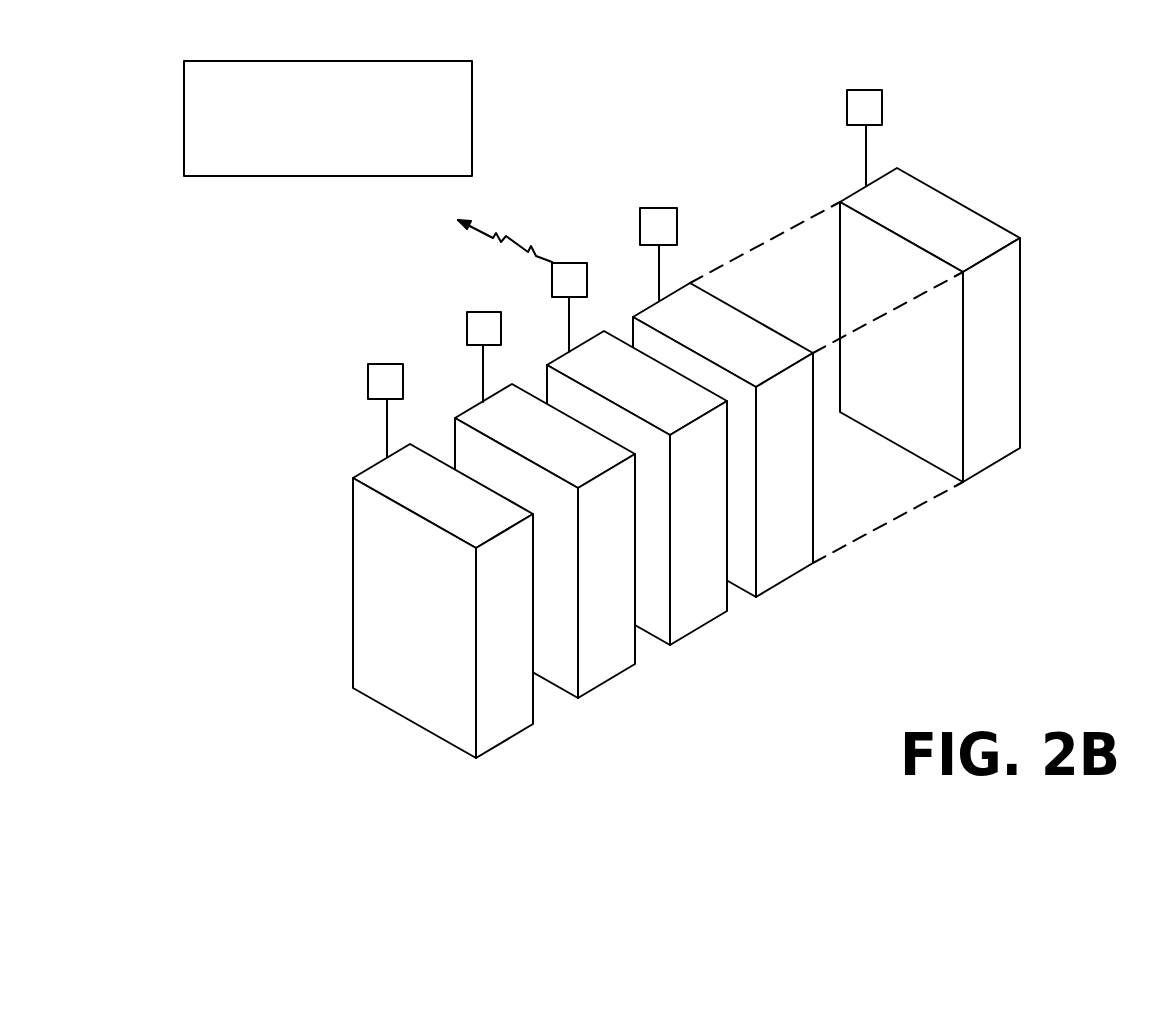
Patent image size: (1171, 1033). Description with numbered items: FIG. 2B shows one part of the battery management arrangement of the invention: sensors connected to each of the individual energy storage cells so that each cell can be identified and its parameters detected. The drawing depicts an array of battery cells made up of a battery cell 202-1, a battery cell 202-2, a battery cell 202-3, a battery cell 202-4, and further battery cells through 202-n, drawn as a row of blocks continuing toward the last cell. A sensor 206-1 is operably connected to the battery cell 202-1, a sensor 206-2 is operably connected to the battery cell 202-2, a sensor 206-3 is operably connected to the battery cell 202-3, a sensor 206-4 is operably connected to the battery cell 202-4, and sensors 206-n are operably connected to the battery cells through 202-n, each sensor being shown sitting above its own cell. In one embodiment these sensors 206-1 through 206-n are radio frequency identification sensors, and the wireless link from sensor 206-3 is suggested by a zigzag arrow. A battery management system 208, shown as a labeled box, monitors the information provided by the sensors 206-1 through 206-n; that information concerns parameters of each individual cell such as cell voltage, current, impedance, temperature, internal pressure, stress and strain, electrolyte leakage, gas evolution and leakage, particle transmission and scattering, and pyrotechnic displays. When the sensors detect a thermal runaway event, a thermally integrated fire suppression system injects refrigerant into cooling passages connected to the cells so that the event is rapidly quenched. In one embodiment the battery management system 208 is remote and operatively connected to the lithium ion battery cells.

The battery cell 202-1 is at (522, 735).
The battery cell 202-2 is at (620, 678).
The battery cell 202-3 is at (707, 628).
The battery cell 202-4 is at (788, 583).
The battery cells 202-n is at (993, 465).
The sensor 206-1 is at (388, 363).
The sensor 206-2 is at (483, 310).
The sensor 206-3 is at (575, 262).
The sensor 206-4 is at (663, 207).
The sensors 206-n is at (882, 113).
The battery management system 208 is at (276, 178).